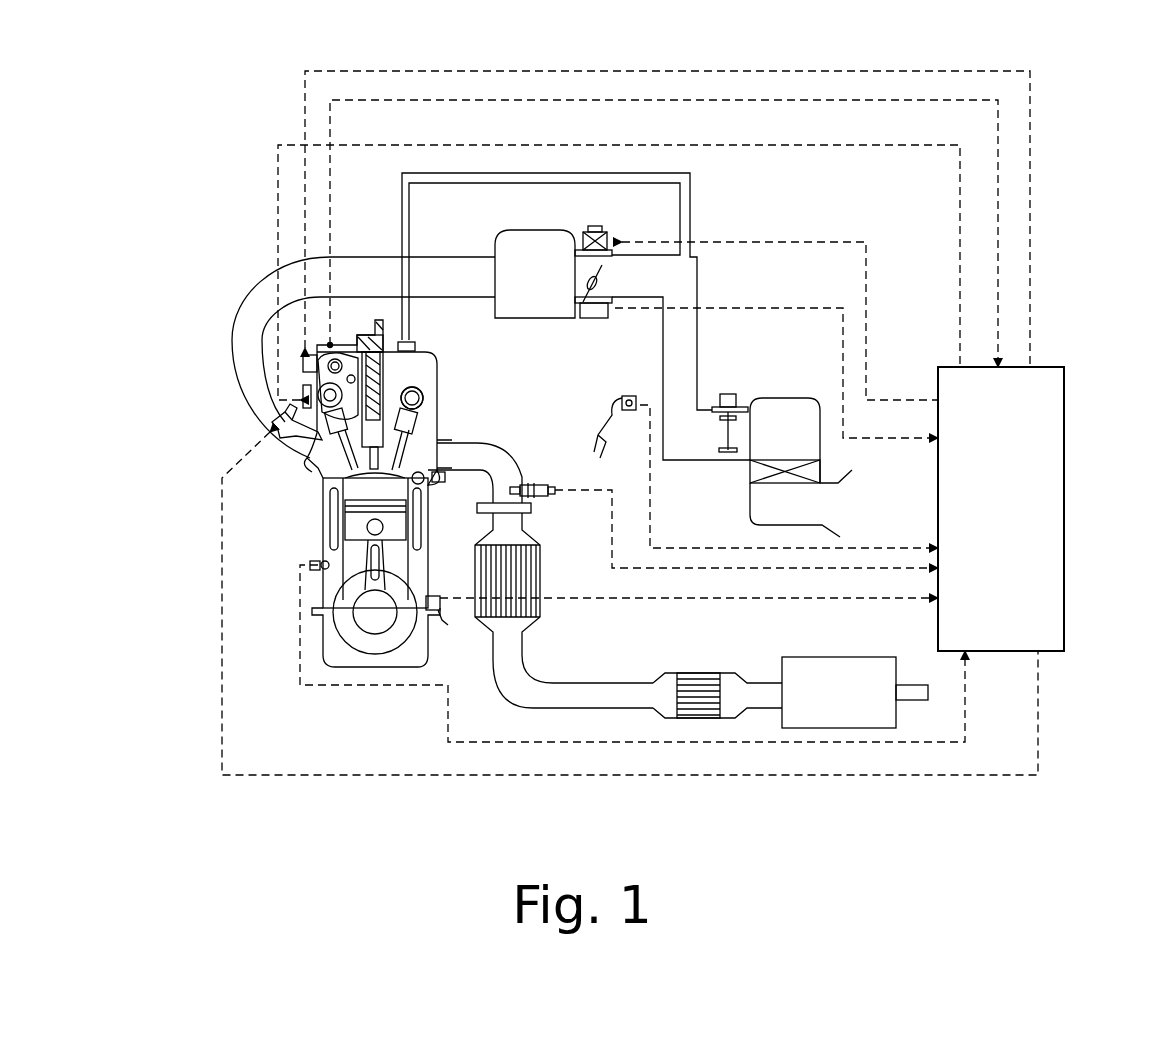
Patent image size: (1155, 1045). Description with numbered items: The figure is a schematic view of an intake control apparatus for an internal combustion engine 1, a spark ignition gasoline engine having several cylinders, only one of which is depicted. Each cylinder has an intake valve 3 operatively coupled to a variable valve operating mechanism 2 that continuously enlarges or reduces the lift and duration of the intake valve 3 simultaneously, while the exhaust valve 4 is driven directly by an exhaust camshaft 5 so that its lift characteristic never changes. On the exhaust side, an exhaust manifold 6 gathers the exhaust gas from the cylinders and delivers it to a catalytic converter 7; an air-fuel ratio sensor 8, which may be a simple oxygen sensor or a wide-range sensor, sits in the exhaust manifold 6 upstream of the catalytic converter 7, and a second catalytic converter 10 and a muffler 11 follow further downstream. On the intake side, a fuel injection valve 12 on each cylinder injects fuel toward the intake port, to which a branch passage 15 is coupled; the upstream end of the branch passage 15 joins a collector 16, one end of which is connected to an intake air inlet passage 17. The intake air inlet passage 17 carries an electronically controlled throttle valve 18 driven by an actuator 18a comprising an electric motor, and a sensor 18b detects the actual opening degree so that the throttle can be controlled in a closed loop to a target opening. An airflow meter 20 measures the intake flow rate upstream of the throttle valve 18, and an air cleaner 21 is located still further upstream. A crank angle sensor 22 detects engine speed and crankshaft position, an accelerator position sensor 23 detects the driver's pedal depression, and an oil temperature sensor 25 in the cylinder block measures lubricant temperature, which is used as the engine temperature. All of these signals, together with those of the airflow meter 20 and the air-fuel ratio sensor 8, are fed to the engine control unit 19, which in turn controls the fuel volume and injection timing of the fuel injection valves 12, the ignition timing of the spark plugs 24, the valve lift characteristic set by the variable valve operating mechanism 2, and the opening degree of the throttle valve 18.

The internal combustion engine 1 is at (312, 524).
The variable valve operating mechanism 2 is at (298, 352).
The intake valve 3 is at (322, 468).
The exhaust valve 4 is at (440, 452).
The exhaust camshaft 5 is at (425, 395).
The exhaust manifold 6 is at (488, 445).
The catalytic converter 7 is at (540, 560).
The air-fuel ratio sensor 8 is at (538, 483).
The second catalytic converter 10 is at (700, 673).
The muffler 11 is at (843, 657).
The fuel injection valve 12 is at (285, 442).
The branch passage 15 is at (228, 382).
The collector 16 is at (512, 252).
The intake air inlet passage 17 is at (660, 262).
The throttle valve 18 is at (585, 283).
The actuator 18a is at (592, 228).
The sensor 18b is at (598, 318).
The engine control unit 19 is at (1028, 400).
The airflow meter 20 is at (722, 432).
The air cleaner 21 is at (780, 458).
The crank angle sensor 22 is at (440, 622).
The accelerator position sensor 23 is at (630, 396).
The spark plug 24 is at (412, 362).
The oil temperature sensor 25 is at (310, 563).